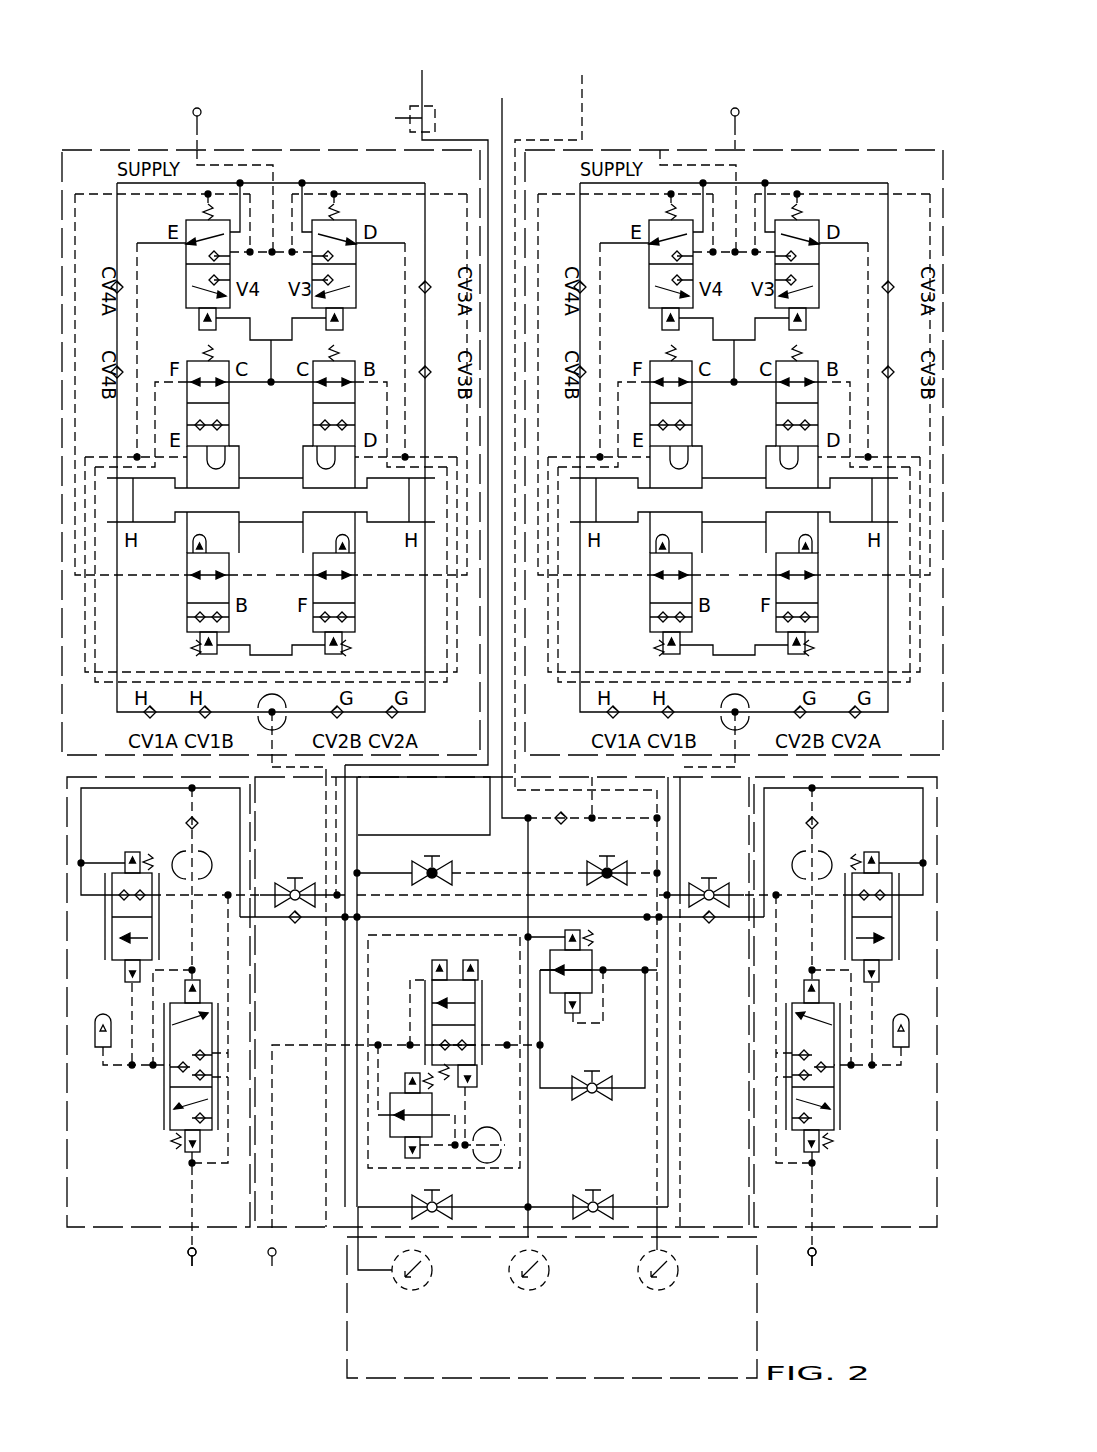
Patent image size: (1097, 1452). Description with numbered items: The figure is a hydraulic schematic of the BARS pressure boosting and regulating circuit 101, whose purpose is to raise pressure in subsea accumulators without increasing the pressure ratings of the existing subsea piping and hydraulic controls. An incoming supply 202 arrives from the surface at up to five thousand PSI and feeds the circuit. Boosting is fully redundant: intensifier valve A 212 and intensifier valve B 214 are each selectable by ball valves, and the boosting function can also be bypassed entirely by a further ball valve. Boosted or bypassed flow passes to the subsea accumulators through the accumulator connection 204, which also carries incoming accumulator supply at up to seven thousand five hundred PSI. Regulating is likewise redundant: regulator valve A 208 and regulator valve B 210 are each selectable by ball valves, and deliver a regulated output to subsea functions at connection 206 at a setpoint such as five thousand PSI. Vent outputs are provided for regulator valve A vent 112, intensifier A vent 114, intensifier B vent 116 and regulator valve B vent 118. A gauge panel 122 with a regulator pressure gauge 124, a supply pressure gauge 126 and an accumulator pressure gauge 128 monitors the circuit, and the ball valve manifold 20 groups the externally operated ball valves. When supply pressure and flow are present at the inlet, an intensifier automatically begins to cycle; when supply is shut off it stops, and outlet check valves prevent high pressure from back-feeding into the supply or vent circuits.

The hydraulic circuit 101 is at (502, 696).
The intensifier valve A 212 is at (97, 148).
The intensifier valve B 214 is at (906, 148).
The regulator valve A vent 112 is at (191, 118).
The intensifier B vent 116 is at (741, 118).
The regulated output connection 206 is at (420, 82).
The incoming supply 202 is at (504, 115).
The accumulator connection 204 is at (584, 82).
The ball valve manifold 20 is at (335, 1240).
The regulator valve A 208 is at (100, 1240).
The regulator valve B 210 is at (905, 1240).
The intensifier A vent 114 is at (186, 1254).
The regulator valve B vent 118 is at (818, 1254).
The gauge panel 122 is at (510, 1297).
The regulator pressure gauge 124 is at (430, 1258).
The supply pressure gauge 126 is at (547, 1258).
The accumulator pressure gauge 128 is at (676, 1258).